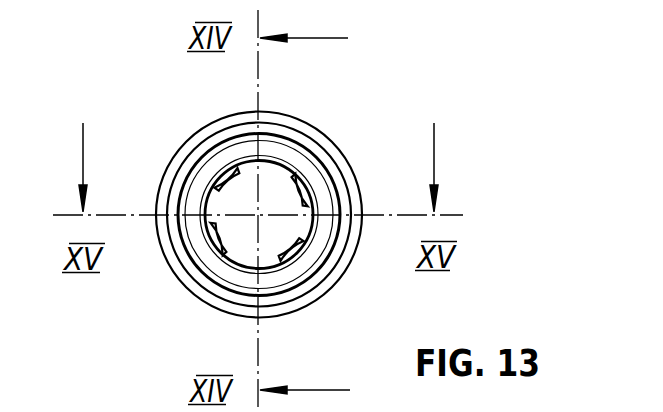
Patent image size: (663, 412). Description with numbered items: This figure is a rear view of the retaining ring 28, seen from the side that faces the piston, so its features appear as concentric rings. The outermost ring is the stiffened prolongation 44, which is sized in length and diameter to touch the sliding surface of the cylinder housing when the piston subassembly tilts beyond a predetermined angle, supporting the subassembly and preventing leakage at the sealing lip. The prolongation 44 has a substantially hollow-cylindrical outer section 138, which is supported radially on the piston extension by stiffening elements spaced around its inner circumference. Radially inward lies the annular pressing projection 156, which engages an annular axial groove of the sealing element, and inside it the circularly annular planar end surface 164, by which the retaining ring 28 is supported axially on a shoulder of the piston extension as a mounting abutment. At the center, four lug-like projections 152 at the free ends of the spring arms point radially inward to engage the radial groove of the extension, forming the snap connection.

The retaining ring 28 is at (336, 122).
The stiffened prolongation 44 is at (355, 158).
The hollow-cylindrical outer section 138 is at (272, 116).
The lug-like projection 152 is at (299, 191).
The annular pressing projection 156 is at (310, 286).
The circularly annular planar end surface 164 is at (232, 274).